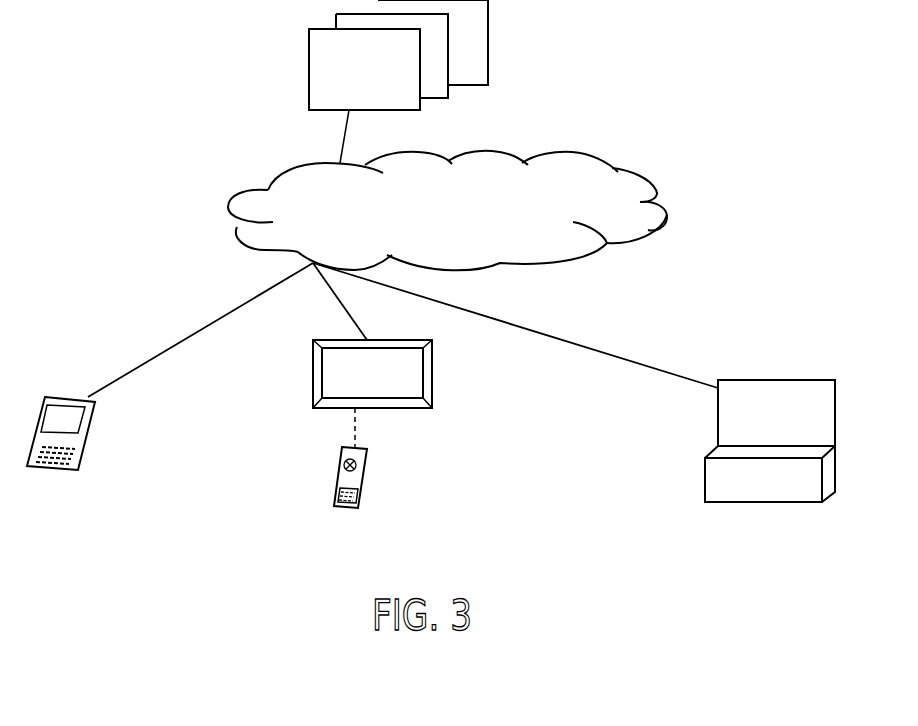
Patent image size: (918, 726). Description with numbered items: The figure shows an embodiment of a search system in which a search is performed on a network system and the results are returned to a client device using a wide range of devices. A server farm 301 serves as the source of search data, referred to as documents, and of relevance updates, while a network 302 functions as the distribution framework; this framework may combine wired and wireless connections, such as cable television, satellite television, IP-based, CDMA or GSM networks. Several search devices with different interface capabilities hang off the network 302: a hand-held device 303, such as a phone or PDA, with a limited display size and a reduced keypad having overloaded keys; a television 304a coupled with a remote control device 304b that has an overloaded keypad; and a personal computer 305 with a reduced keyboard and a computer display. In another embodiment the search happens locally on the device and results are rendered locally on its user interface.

The server farm 301 is at (379, 78).
The network 302 is at (652, 182).
The hand-held device 303 is at (92, 433).
The television 304a is at (313, 373).
The remote control device 304b is at (337, 475).
The personal computer 305 is at (783, 380).